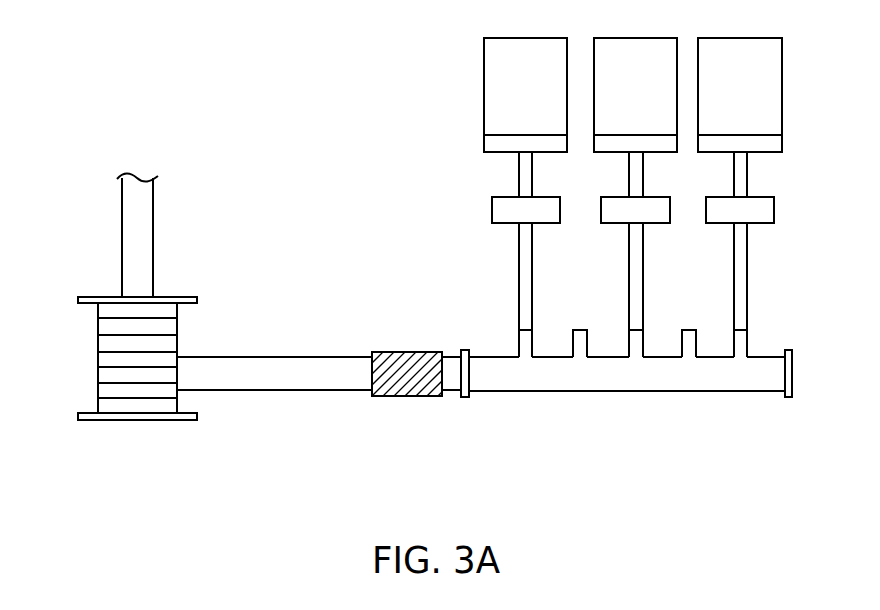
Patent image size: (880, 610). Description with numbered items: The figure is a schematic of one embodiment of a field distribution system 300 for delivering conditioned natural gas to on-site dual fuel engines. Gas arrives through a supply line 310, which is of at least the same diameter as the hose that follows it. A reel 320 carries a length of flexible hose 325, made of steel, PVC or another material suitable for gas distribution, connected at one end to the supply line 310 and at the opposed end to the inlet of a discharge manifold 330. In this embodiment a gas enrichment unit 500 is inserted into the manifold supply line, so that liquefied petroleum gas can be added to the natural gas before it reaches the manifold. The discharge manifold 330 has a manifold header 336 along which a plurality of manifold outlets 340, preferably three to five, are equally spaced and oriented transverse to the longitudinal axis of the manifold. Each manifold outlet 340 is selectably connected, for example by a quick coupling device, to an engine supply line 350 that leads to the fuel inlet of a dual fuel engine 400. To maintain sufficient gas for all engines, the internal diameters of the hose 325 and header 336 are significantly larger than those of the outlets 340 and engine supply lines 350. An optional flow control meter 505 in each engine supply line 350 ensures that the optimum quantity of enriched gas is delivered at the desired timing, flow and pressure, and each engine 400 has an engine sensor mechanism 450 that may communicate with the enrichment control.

The field distribution system 300 is at (258, 449).
The supply line 310 is at (122, 228).
The reel 320 is at (138, 420).
The flexible hose 325 is at (297, 392).
The discharge manifold 330 is at (477, 385).
The manifold header 336 is at (652, 392).
The manifold outlets 340 is at (747, 342).
The engine supply line 350 is at (518, 258).
The dual fuel engine 400 is at (495, 69).
The engine sensor mechanism 450 is at (485, 139).
The gas enrichment unit 500 is at (408, 350).
The flow control meter 505 is at (492, 208).